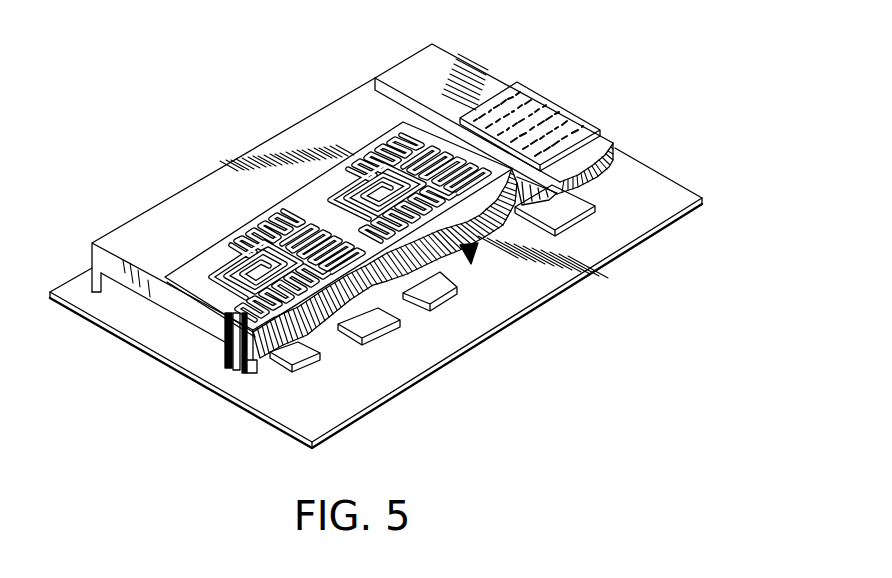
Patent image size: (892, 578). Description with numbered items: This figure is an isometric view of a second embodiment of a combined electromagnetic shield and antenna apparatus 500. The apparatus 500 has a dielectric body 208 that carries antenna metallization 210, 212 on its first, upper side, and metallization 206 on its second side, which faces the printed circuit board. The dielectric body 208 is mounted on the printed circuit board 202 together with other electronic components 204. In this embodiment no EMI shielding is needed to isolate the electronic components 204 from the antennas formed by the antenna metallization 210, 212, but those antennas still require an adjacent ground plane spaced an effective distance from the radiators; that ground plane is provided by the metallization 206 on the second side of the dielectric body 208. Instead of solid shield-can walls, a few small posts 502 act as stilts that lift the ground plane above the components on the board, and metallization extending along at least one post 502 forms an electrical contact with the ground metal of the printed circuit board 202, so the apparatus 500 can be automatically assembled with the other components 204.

The combined electromagnetic shield and antenna apparatus 500 is at (483, 425).
The printed circuit board 202 is at (488, 297).
The electronic components 204 is at (574, 208).
The metallization 206 is at (248, 378).
The dielectric body 208 is at (192, 190).
The antenna metallization 210 is at (376, 146).
The antenna metallization 212 is at (546, 96).
The posts 502 is at (102, 294).